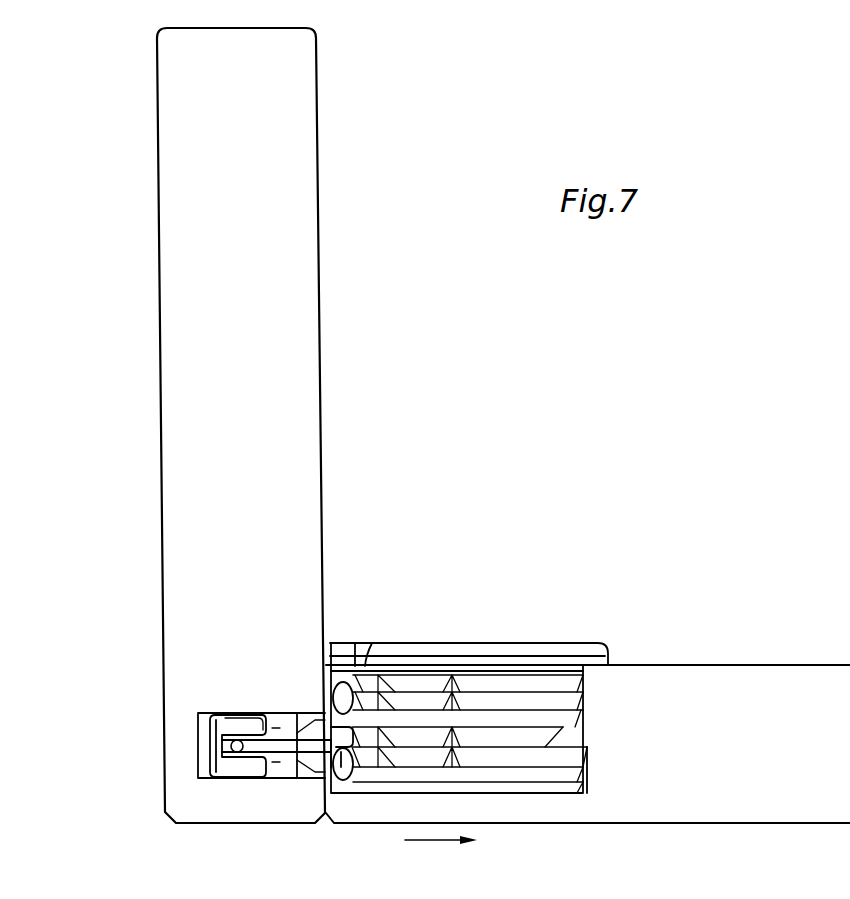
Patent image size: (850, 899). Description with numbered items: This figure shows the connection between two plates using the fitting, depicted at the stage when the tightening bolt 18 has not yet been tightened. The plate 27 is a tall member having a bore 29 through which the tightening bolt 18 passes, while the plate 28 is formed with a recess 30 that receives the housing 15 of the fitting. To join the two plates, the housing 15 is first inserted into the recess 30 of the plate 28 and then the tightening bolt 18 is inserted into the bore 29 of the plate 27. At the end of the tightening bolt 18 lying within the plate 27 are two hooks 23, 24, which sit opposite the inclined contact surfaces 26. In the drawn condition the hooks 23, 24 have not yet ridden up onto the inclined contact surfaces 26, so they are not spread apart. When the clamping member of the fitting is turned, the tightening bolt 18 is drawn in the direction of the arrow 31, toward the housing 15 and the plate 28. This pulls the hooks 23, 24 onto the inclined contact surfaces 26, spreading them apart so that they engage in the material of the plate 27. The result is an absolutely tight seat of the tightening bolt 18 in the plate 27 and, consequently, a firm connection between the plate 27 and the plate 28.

The plate 27 is at (202, 343).
The plate 28 is at (778, 682).
The housing 15 is at (510, 642).
The recess 30 is at (580, 703).
The tightening bolt 18 is at (297, 717).
The hook 23 is at (240, 772).
The inclined contact surface 26 is at (272, 828).
The bore 29 is at (233, 710).
The hook 24 is at (250, 717).
The arrow 31 is at (425, 838).